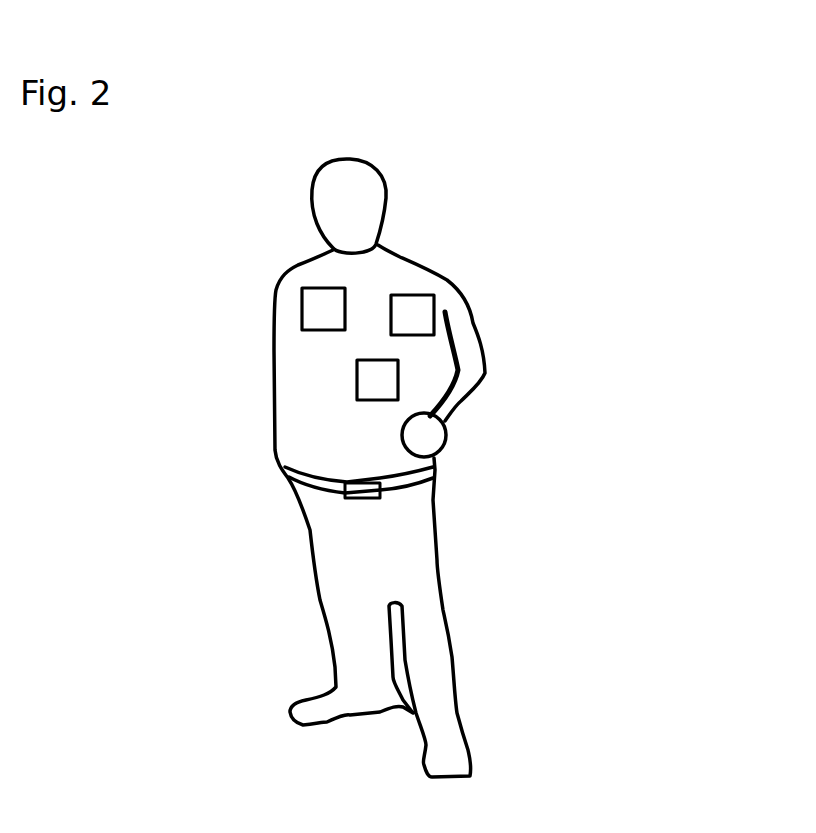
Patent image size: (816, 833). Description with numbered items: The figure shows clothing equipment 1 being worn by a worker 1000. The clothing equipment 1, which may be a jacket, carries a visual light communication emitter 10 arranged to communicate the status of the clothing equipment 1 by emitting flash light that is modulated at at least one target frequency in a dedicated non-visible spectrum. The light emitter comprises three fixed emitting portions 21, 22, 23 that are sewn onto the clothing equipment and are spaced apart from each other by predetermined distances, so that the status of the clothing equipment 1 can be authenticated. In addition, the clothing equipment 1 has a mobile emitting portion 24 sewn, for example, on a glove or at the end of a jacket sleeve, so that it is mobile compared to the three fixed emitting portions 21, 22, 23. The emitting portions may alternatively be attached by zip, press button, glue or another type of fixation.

The clothing equipment 1 is at (437, 231).
The visual light communication emitter 10 is at (417, 341).
The fixed emitting portion 21 is at (251, 277).
The fixed emitting portion 22 is at (507, 267).
The fixed emitting portion 23 is at (275, 436).
The mobile emitting portion 24 is at (517, 397).
The worker 1000 is at (472, 578).